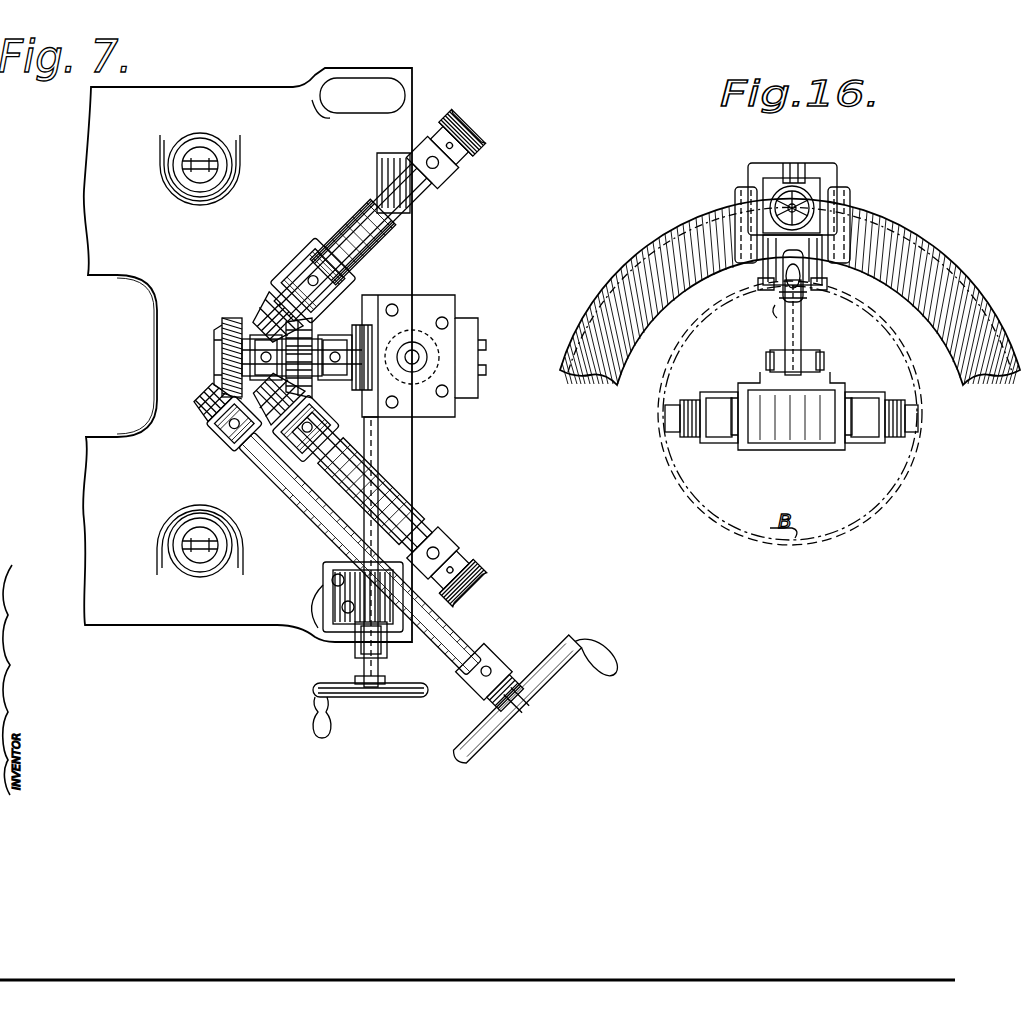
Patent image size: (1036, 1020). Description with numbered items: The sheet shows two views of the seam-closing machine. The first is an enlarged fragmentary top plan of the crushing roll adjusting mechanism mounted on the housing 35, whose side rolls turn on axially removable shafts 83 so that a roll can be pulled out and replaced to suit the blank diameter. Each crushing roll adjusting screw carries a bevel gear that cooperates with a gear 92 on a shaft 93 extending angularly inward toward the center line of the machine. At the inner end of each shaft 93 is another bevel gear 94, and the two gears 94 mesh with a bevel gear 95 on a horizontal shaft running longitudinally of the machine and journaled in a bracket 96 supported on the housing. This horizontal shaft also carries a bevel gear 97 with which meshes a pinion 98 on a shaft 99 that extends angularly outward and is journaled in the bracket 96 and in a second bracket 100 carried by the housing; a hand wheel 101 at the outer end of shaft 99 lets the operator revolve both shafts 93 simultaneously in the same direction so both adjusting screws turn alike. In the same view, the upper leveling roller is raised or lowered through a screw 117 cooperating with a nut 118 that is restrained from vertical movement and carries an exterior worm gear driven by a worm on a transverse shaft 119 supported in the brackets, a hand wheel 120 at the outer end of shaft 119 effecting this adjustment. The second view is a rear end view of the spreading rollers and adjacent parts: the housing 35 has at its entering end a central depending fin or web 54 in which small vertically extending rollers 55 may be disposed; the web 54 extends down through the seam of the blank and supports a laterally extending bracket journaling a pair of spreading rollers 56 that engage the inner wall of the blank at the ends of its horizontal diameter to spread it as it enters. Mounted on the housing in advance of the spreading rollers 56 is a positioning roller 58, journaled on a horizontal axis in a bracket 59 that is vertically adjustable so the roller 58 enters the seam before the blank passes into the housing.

In FIG. 7, the shafts 83 is at (200, 155).
In FIG. 7, the gear 92 is at (462, 112).
In FIG. 7, the shaft 93 is at (375, 222).
In FIG. 7, the bevel gear 94 is at (268, 298).
In FIG. 7, the bevel gear 95 is at (286, 345).
In FIG. 7, the bracket 96 is at (302, 262).
In FIG. 7, the bevel gear 97 is at (222, 335).
In FIG. 7, the pinion 98 is at (218, 400).
In FIG. 7, the shaft 99 is at (300, 489).
In FIG. 7, the bracket 100 is at (476, 612).
In FIG. 7, the hand wheel 101 is at (555, 682).
In FIG. 7, the screw 117 is at (414, 352).
In FIG. 7, the nut 118 is at (470, 357).
In FIG. 7, the shaft 119 is at (380, 453).
In FIG. 7, the hand wheel 120 is at (405, 697).
In FIG. 16, the housing 35 is at (945, 252).
In FIG. 16, the depending fin or web 54 is at (805, 337).
In FIG. 16, the rollers 55 is at (778, 300).
In FIG. 16, the spreading rollers 56 is at (667, 416).
In FIG. 16, the positioning roller 58 is at (803, 265).
In FIG. 16, the bracket 59 is at (820, 186).